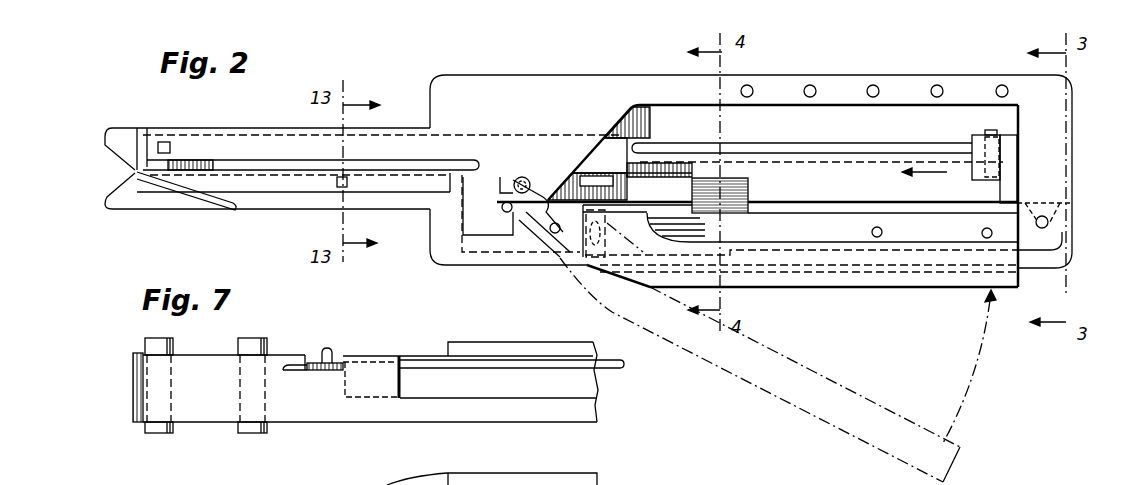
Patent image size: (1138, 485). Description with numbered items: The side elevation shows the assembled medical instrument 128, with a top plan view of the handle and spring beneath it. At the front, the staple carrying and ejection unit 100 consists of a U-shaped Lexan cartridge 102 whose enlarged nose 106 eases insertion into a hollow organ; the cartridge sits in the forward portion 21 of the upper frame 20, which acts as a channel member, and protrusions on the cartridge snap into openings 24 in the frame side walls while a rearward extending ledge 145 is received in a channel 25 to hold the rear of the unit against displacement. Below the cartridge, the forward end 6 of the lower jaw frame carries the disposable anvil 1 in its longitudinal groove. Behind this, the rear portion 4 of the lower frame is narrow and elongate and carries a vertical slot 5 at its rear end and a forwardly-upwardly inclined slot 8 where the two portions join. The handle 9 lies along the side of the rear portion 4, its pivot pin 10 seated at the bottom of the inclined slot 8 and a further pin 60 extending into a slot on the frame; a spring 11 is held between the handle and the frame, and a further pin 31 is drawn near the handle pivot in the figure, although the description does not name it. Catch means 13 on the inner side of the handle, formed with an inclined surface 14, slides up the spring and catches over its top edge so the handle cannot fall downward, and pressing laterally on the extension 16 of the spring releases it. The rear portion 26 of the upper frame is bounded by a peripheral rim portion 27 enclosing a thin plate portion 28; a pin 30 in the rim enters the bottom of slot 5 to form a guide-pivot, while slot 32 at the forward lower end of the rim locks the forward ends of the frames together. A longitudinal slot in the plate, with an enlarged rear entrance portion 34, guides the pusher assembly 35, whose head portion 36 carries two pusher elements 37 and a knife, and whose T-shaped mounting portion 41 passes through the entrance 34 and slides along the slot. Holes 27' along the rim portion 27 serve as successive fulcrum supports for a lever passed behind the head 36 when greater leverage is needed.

In FIG. 2, the anvil 1 is at (195, 183).
In FIG. 2, the rear portion of the lower frame 4 is at (1025, 268).
In FIG. 2, the vertical slot 5 is at (1067, 222).
In FIG. 2, the forward end 6 is at (110, 205).
In FIG. 2, the inclined slot 8 is at (530, 217).
In FIG. 2, the handle 9 is at (843, 277).
In FIG. 7, the handle 9 is at (365, 410).
In FIG. 2, the pivot pin 10 is at (555, 234).
In FIG. 7, the pivot pin 10 is at (253, 433).
In FIG. 2, the spring 11 is at (803, 270).
In FIG. 7, the spring 11 is at (517, 357).
In FIG. 7, the catch means 13 is at (390, 356).
In FIG. 7, the inclined surface 14 is at (377, 357).
In FIG. 2, the extension 16 is at (737, 190).
In FIG. 2, the upper frame 20 is at (572, 85).
In FIG. 2, the forward portion of the upper frame 21 is at (240, 125).
In FIG. 2, the openings 24 is at (167, 142).
In FIG. 2, the channel 25 is at (478, 167).
In FIG. 2, the rear portion of the upper frame 26 is at (838, 78).
In FIG. 2, the peripheral rim portion 27 is at (996, 95).
In FIG. 2, the holes 27' is at (874, 70).
In FIG. 2, the plate portion 28 is at (962, 128).
In FIG. 2, the pin 30 is at (1050, 228).
In FIG. 2, the pivot pin 31 is at (507, 213).
In FIG. 7, the pivot pin 31 is at (158, 434).
In FIG. 2, the slot 32 is at (497, 204).
In FIG. 2, the enlarged rear entrance portion 34 is at (990, 132).
In FIG. 2, the pusher assembly 35 is at (825, 138).
In FIG. 2, the head portion 36 is at (1008, 190).
In FIG. 2, the pusher elements 37 is at (842, 152).
In FIG. 2, the T-shaped mounting portion 41 is at (1003, 153).
In FIG. 7, the pin 60 is at (327, 348).
In FIG. 2, the staple carrying and ejection unit 100 is at (100, 152).
In FIG. 2, the cartridge 102 is at (272, 165).
In FIG. 2, the enlarged nose 106 is at (125, 138).
In FIG. 2, the medical instrument 128 is at (480, 70).
In FIG. 2, the rearward extending ledge 145 is at (287, 163).